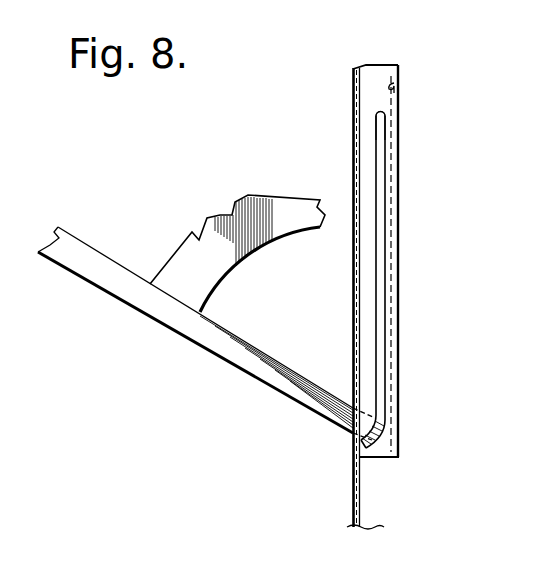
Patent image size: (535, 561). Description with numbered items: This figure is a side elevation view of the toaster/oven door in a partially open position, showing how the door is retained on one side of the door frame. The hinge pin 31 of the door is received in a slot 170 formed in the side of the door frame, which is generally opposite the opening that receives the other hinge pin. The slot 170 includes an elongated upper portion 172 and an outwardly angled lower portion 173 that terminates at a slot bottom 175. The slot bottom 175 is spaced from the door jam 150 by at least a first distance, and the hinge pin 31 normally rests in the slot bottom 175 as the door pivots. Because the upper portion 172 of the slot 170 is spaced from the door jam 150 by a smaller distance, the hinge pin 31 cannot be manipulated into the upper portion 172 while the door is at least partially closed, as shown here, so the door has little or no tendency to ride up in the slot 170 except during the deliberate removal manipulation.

The door jam 150 is at (402, 81).
The slot 170 is at (375, 133).
The elongated upper portion 172 is at (394, 143).
The outwardly angled lower portion 173 is at (353, 433).
The slot bottom 175 is at (365, 448).
The hinge pin 31 is at (380, 436).